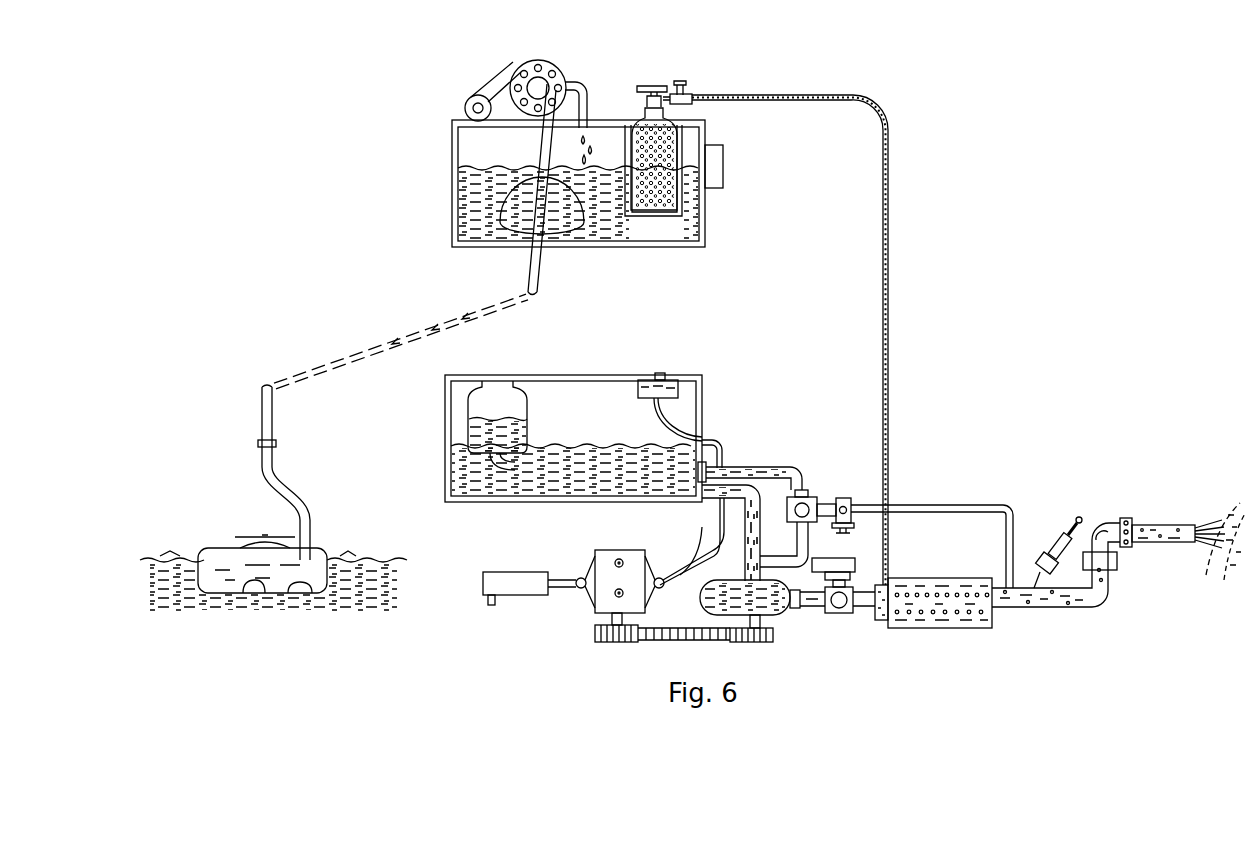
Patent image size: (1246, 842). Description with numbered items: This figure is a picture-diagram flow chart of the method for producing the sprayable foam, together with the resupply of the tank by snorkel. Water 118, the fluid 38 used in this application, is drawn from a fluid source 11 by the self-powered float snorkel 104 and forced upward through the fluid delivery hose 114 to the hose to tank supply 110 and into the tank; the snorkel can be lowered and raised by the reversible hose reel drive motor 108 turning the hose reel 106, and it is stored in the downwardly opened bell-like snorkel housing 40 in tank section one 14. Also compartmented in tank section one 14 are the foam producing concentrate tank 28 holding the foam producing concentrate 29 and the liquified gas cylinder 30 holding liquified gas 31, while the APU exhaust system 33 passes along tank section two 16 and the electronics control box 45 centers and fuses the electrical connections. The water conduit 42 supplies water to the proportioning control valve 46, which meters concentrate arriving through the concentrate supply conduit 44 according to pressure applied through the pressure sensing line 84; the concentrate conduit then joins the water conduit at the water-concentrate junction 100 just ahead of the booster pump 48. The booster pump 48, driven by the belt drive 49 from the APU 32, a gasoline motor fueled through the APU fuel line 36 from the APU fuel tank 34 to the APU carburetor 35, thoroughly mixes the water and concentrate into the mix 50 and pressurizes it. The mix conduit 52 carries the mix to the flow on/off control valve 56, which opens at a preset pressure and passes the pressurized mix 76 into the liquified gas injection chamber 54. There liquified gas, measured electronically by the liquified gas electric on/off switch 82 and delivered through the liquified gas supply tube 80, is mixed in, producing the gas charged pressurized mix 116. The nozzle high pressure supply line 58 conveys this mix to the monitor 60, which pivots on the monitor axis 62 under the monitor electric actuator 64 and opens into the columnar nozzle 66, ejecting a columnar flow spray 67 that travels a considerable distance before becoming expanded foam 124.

The fluid source 11 is at (658, 225).
The tank section one 14 is at (455, 157).
The tank section two 16 is at (447, 438).
The foam producing concentrate tank 28 is at (497, 388).
The foam producing concentrate 29 is at (470, 432).
The liquified gas cylinder 30 is at (657, 181).
The liquified gas 31 is at (637, 125).
The APU 32 is at (615, 550).
The APU exhaust system 33 is at (520, 590).
The APU fuel tank 34 is at (651, 380).
The APU carburetor 35 is at (658, 578).
The APU fuel line 36 is at (723, 440).
The fluid 38 is at (620, 225).
The bell-like snorkel housing 40 is at (503, 200).
The water conduit 42 is at (730, 490).
The concentrate supply conduit 44 is at (790, 468).
The electronics control box 45 is at (725, 160).
The proportioning control valve 46 is at (810, 500).
The booster pump 48 is at (776, 615).
The belt drive 49 is at (630, 645).
The mix 50 is at (762, 643).
The mix conduit 52 is at (840, 558).
The liquified gas injection chamber 54 is at (960, 615).
The flow on/off control valve 56 is at (845, 613).
The nozzle high pressure supply line 58 is at (1056, 608).
The monitor 60 is at (1128, 518).
The monitor axis 62 is at (1100, 522).
The monitor electric actuator 64 is at (1052, 552).
The columnar nozzle 66 is at (1160, 545).
The columnar flow spray 67 is at (1200, 530).
The pressurized mix 76 is at (812, 599).
The liquified gas supply tube 80 is at (803, 96).
The liquified gas electric on/off switch 82 is at (683, 87).
The pressure sensing line 84 is at (940, 505).
The water-concentrate junction 100 is at (703, 565).
The self-powered float snorkel 104 is at (225, 548).
The hose reel 106 is at (548, 62).
The hose reel drive motor 108 is at (472, 96).
The hose to tank supply 110 is at (587, 95).
The fluid delivery hose 114 is at (528, 277).
The gas charged pressurized mix 116 is at (915, 612).
The water 118 is at (271, 542).
The expanded foam 124 is at (1226, 566).